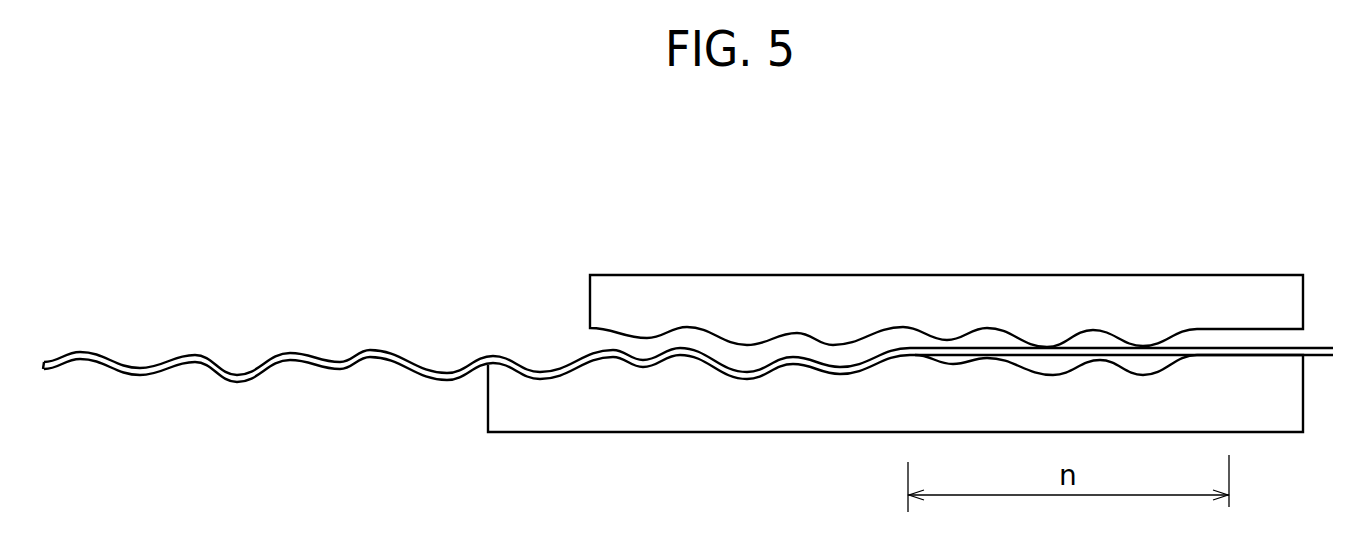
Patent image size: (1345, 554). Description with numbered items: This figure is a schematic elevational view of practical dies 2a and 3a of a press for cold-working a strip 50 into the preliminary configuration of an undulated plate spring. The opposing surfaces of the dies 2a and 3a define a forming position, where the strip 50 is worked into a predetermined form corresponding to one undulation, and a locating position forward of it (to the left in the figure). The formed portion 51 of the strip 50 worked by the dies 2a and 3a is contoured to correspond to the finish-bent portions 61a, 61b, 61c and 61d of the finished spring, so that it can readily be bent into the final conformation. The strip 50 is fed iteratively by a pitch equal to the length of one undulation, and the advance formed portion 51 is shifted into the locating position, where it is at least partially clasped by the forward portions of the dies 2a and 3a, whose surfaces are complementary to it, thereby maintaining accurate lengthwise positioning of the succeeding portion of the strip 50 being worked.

The formed portion 51 is at (85, 343).
The strip 50 is at (1288, 353).
The die 3a is at (1007, 287).
The die 2a is at (868, 408).
The finish-bent portion of undulated plate spring 61a is at (195, 350).
The finish-bent portion of undulated plate spring 61b is at (282, 347).
The finish-bent portion of undulated plate spring 61c is at (343, 367).
The finish-bent portion of undulated plate spring 61d is at (415, 370).